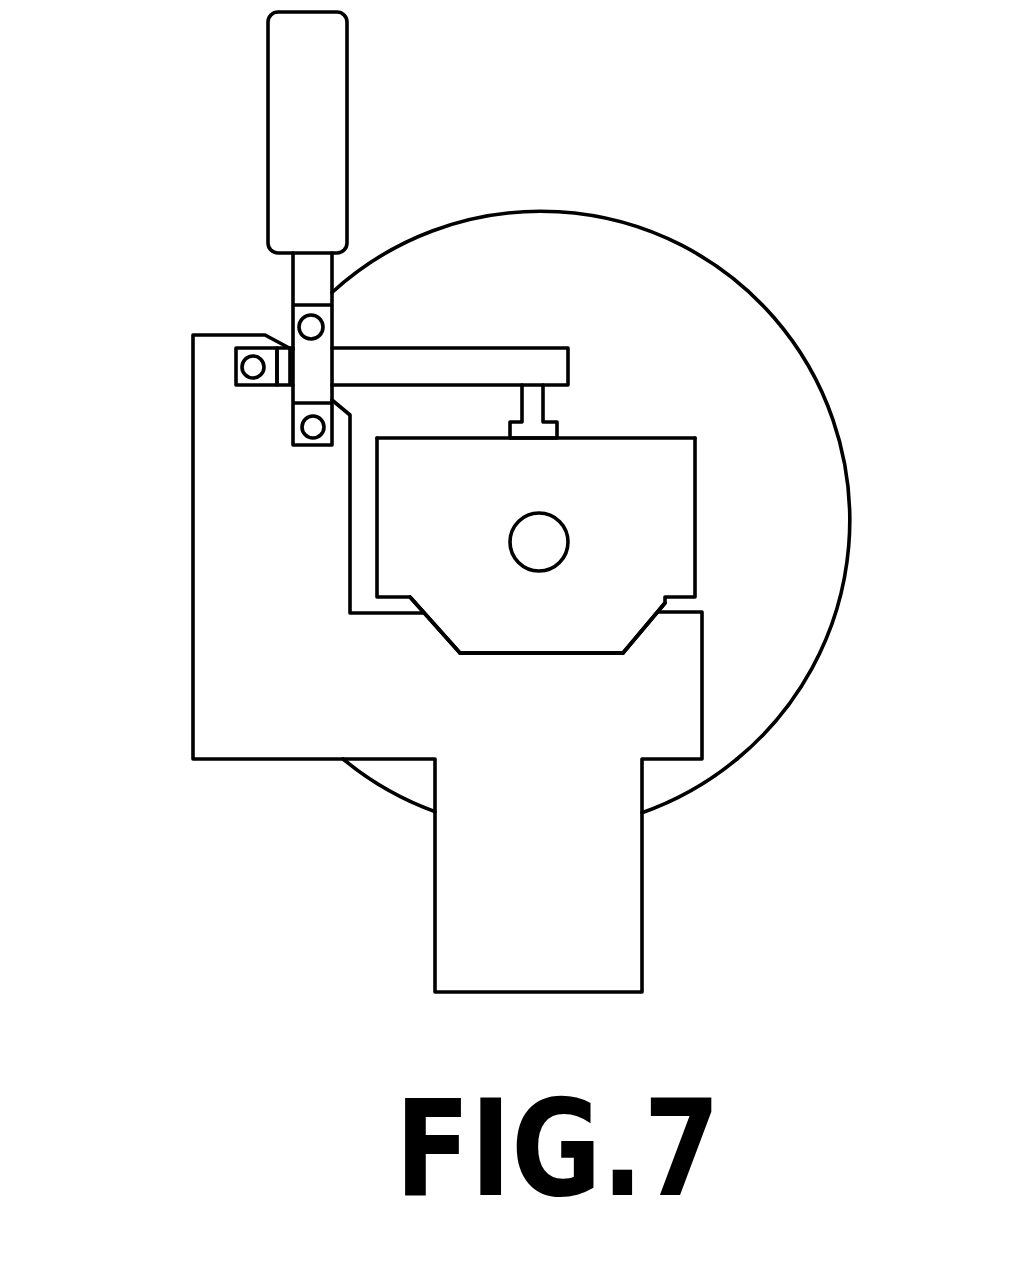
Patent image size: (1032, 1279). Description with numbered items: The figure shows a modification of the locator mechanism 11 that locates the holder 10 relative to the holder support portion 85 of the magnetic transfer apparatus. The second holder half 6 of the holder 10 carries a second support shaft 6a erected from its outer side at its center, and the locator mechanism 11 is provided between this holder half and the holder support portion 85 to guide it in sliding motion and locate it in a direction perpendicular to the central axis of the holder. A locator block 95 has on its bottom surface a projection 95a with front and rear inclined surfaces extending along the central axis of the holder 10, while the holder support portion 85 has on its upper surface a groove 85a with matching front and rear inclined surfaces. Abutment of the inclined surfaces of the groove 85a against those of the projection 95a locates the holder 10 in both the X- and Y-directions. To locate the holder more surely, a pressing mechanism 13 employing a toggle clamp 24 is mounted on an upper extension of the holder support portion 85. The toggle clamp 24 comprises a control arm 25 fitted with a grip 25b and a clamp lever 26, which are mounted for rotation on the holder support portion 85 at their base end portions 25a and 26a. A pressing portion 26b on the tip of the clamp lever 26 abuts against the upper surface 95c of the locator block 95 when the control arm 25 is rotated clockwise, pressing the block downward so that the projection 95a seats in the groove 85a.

The second holder half 6 is at (620, 511).
The second support shaft 6a is at (560, 536).
The holder 10 is at (620, 511).
The locator mechanism 11 is at (715, 632).
The pressing mechanism 13 is at (620, 449).
The toggle clamp 24 is at (314, 266).
The control arm 25 is at (242, 364).
The base end portion of control arm 25a is at (310, 428).
The grip 25b is at (335, 135).
The clamp lever 26 is at (386, 345).
The base end portion of clamp lever 26a is at (240, 368).
The pressing portion 26b is at (558, 425).
The holder support portion 85 is at (447, 663).
The groove 85a is at (498, 650).
The locator block 95 is at (511, 520).
The projection 95a is at (546, 648).
The upper surface of locator block 95c is at (655, 438).